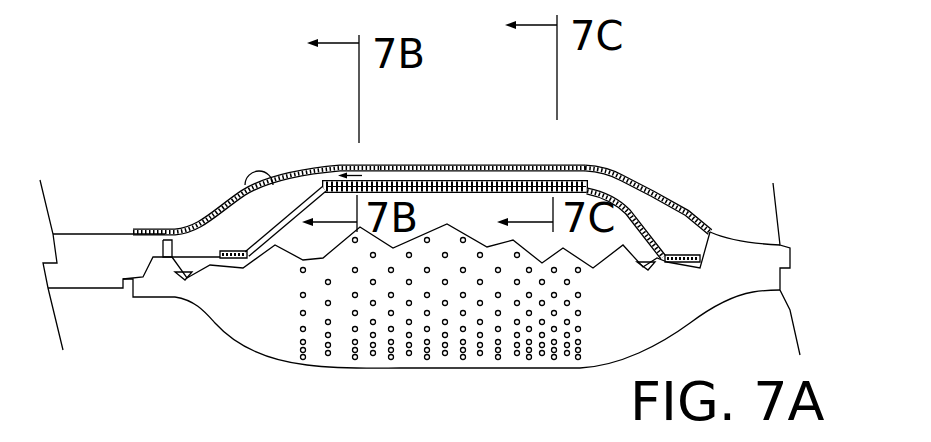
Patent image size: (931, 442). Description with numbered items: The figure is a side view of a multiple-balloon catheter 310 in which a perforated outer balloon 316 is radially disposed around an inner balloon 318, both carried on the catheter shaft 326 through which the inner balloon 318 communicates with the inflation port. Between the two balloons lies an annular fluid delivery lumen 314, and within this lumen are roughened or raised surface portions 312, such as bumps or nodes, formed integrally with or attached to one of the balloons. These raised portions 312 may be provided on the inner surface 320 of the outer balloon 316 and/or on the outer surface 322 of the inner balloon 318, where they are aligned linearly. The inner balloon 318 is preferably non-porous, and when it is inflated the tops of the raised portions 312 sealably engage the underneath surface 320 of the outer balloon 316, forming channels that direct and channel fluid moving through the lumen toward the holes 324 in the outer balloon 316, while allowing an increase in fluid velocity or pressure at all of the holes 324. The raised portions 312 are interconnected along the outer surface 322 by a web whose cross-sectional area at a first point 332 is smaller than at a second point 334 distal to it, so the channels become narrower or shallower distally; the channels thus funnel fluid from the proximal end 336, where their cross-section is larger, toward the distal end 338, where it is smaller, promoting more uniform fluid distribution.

The multiple-balloon catheter 310 is at (640, 178).
The raised surface portions 312 is at (433, 166).
The annular fluid delivery lumen 314 is at (662, 226).
The outer balloon 316 is at (236, 199).
The inner balloon 318 is at (658, 172).
The inner surface of the outer balloon 320 is at (236, 199).
The outer surface of the inner balloon 322 is at (330, 180).
The holes 324 is at (513, 166).
The catheter shaft 326 is at (110, 236).
The first point 332 is at (380, 165).
The second point 334 is at (595, 168).
The proximal end 336 is at (333, 178).
The distal end 338 is at (613, 192).